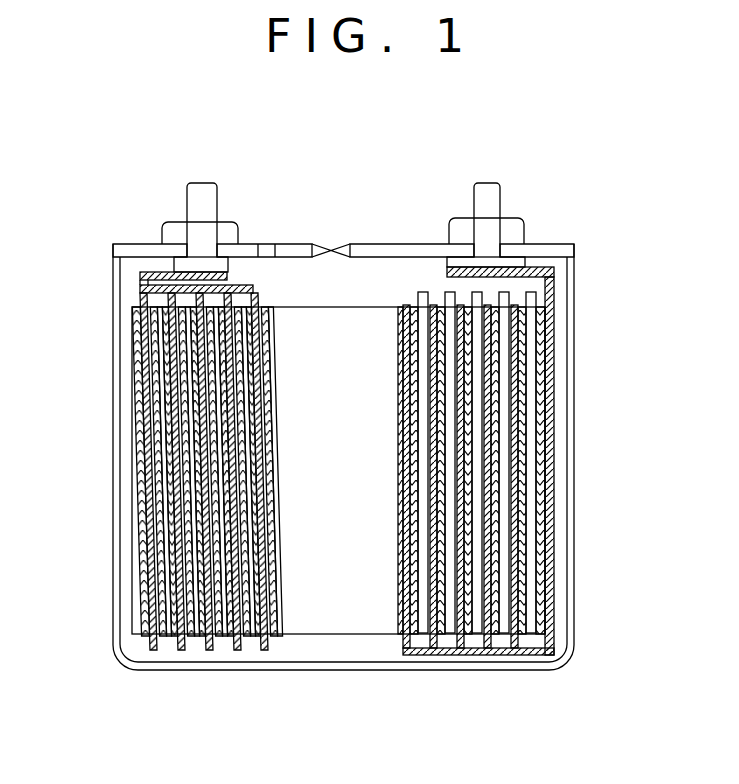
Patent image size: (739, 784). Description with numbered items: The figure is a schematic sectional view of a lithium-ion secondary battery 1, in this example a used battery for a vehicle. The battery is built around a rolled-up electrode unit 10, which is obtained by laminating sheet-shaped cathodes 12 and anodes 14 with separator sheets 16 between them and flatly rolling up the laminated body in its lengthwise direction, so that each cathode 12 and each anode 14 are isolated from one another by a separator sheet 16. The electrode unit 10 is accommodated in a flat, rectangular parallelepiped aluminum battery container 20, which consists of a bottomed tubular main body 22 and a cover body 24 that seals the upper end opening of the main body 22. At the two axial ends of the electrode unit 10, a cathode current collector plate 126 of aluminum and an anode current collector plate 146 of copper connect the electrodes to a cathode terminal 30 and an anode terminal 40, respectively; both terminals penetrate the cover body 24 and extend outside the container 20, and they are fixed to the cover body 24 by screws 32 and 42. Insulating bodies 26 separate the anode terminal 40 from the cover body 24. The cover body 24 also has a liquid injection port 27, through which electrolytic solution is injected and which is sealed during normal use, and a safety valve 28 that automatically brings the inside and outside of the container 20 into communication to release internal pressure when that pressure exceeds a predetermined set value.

The secondary battery 1 is at (599, 160).
The rolled-up electrode unit 10 is at (315, 650).
The cathode 12 is at (142, 558).
The anode 14 is at (150, 493).
The separator sheet 16 is at (152, 528).
The battery container 20 is at (586, 385).
The main body 22 is at (573, 460).
The cover body 24 is at (566, 248).
The insulating body 26 is at (525, 243).
The liquid injection port 27 is at (263, 250).
The safety valve 28 is at (331, 250).
The cathode terminal 30 is at (203, 185).
The screw 32 is at (176, 232).
The anode terminal 40 is at (485, 185).
The screw 42 is at (512, 222).
The cathode current collector plate 126 is at (140, 276).
The anode current collector plate 146 is at (549, 300).